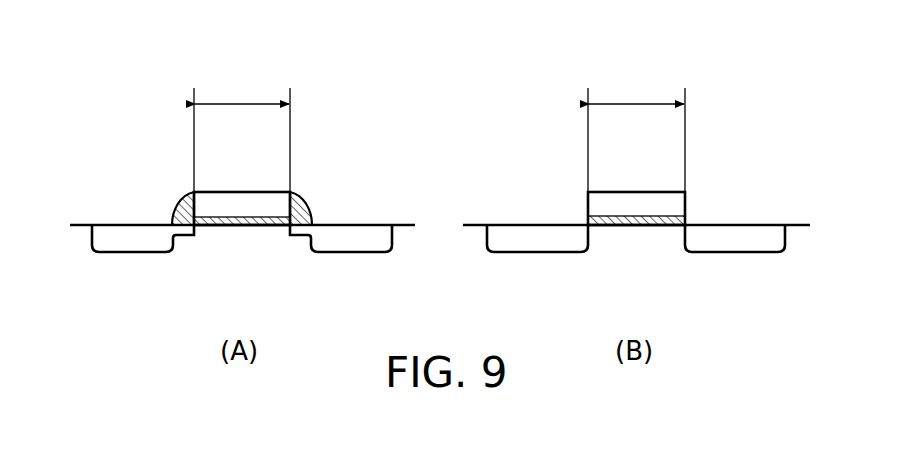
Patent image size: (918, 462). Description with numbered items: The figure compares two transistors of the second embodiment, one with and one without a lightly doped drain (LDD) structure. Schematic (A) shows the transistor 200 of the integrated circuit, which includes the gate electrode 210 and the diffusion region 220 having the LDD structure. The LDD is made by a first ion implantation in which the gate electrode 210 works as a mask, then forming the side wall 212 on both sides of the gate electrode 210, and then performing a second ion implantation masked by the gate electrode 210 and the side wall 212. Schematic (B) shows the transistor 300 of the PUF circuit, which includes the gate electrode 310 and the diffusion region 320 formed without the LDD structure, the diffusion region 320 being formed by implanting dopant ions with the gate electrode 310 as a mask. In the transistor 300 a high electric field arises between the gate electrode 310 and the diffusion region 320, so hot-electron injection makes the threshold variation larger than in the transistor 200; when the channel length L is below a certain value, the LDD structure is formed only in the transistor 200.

The transistor 200 is at (133, 104).
The gate electrode 210 is at (244, 191).
The side wall 212 is at (178, 202).
The diffusion region 220 is at (133, 243).
The transistor 300 is at (527, 104).
The gate electrode 310 is at (638, 191).
The diffusion region 320 is at (540, 243).